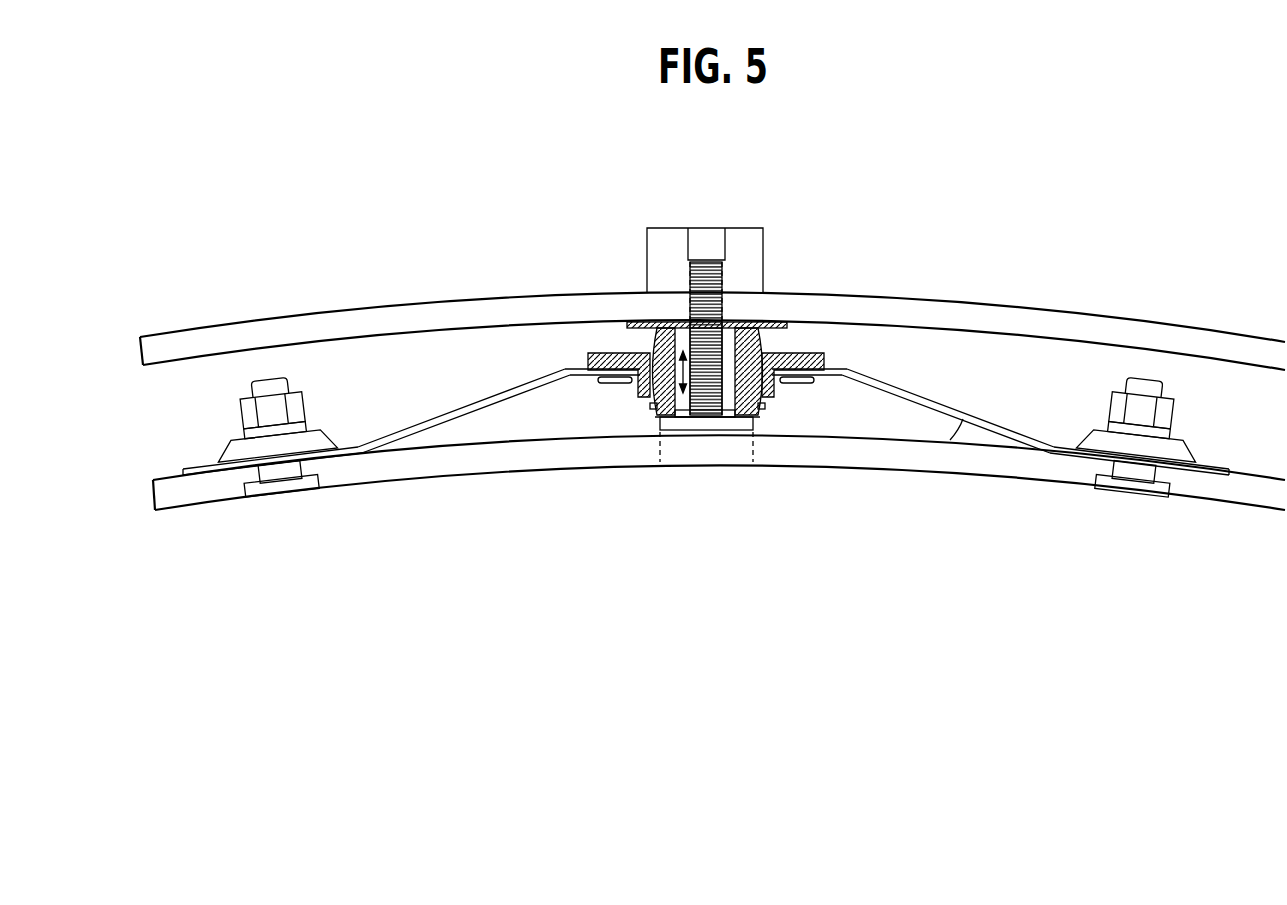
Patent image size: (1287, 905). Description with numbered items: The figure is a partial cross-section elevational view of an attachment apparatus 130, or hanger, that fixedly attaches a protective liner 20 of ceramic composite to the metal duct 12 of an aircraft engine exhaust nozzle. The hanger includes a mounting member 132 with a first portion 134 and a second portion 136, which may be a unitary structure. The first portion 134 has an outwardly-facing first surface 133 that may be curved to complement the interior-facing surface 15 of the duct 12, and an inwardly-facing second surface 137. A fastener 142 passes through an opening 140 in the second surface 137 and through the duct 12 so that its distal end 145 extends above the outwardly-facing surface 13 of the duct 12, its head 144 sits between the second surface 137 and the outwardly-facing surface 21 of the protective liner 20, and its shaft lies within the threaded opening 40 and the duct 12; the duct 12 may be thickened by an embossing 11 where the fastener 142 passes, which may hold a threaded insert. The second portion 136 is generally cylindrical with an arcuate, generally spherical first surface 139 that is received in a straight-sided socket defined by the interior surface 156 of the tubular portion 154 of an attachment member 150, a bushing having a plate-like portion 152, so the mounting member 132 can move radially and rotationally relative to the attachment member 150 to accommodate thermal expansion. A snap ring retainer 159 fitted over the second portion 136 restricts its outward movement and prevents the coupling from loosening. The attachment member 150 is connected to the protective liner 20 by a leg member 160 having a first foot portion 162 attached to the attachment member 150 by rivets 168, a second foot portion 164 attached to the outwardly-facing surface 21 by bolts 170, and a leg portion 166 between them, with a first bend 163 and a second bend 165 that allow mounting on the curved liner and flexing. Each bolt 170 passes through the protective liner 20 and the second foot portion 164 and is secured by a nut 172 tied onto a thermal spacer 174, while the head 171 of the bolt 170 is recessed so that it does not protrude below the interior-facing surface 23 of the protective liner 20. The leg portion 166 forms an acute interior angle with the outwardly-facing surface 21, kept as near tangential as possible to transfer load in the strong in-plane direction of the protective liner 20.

The embossing 11 is at (725, 234).
The metal duct 12 is at (712, 322).
The outwardly-facing surface of the duct 13 is at (712, 322).
The interior-facing surface of the duct 15 is at (1113, 345).
The protective liner 20 is at (719, 463).
The outwardly-facing surface of the protective liner 21 is at (719, 463).
The interior-facing surface of the protective liner 23 is at (926, 473).
The threaded opening 40 is at (698, 237).
The attachment apparatus 130 is at (732, 361).
The mounting member 132 is at (655, 298).
The first surface 133 is at (659, 307).
The first portion 134 is at (706, 297).
The second portion 136 is at (662, 340).
The second surface 137 is at (665, 425).
The first surface of the second portion 139 is at (707, 420).
The opening 140 is at (761, 295).
The fastener 142 is at (763, 325).
The head of the fastener 144 is at (685, 462).
The distal end of the fastener 145 is at (707, 218).
The attachment member 150 is at (650, 311).
The plate-like portion 152 is at (840, 338).
The tubular portion 154 is at (765, 407).
The interior surface 156 is at (652, 410).
The snap ring retainer 159 is at (740, 420).
The leg member 160 is at (709, 354).
The first foot portion 162 is at (585, 380).
The first bend 163 is at (567, 369).
The second foot portion 164 is at (198, 462).
The second bend 165 is at (358, 447).
The leg portion 166 is at (1008, 432).
The rivets 168 is at (810, 384).
The bolts 170 is at (268, 385).
The head of the bolt 171 is at (243, 490).
The nut 172 is at (717, 403).
The thermal spacer 174 is at (240, 447).